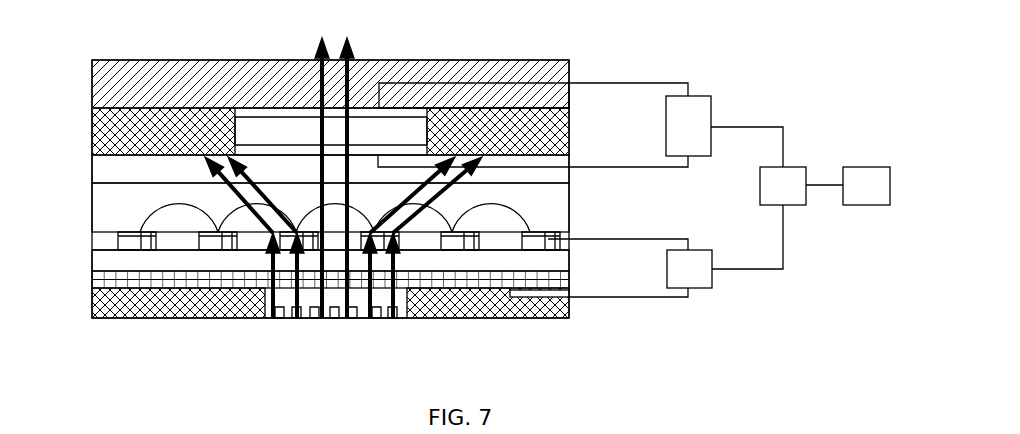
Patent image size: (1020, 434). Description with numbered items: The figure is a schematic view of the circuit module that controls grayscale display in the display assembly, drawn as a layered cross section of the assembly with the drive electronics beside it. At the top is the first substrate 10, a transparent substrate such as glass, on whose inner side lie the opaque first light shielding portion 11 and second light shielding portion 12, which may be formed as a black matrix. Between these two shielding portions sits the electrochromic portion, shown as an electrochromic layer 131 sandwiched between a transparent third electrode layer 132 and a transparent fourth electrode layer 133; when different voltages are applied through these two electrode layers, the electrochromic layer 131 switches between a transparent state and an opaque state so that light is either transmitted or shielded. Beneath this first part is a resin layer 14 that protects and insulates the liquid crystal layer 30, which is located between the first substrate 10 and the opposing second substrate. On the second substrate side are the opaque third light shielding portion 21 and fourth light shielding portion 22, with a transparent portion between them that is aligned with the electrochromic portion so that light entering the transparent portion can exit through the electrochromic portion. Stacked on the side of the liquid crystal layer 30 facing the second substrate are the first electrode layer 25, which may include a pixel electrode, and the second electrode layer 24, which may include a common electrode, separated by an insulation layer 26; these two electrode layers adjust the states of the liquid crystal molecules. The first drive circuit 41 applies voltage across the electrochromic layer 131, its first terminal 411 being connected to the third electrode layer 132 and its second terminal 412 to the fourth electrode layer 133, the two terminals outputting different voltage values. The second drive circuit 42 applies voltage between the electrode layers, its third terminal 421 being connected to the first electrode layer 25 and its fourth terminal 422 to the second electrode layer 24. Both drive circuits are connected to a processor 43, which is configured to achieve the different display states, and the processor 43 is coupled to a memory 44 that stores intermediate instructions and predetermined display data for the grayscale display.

The first substrate 10 is at (550, 78).
The first light shielding portion 11 is at (110, 127).
The second light shielding portion 12 is at (548, 130).
The resin layer 14 is at (110, 170).
The third light shielding portion 21 is at (122, 303).
The fourth light shielding portion 22 is at (552, 307).
The second electrode layer 24 is at (127, 285).
The first electrode layer 25 is at (137, 240).
The insulation layer 26 is at (117, 263).
The liquid crystal layer 30 is at (548, 218).
The first drive circuit 41 is at (677, 126).
The second drive circuit 42 is at (683, 277).
The processor 43 is at (776, 178).
The memory 44 is at (867, 185).
The electrochromic layer 131 is at (293, 135).
The third electrode layer 132 is at (313, 112).
The fourth electrode layer 133 is at (265, 152).
The first terminal 411 is at (689, 96).
The second terminal 412 is at (690, 157).
The third terminal 421 is at (688, 250).
The fourth terminal 422 is at (690, 288).